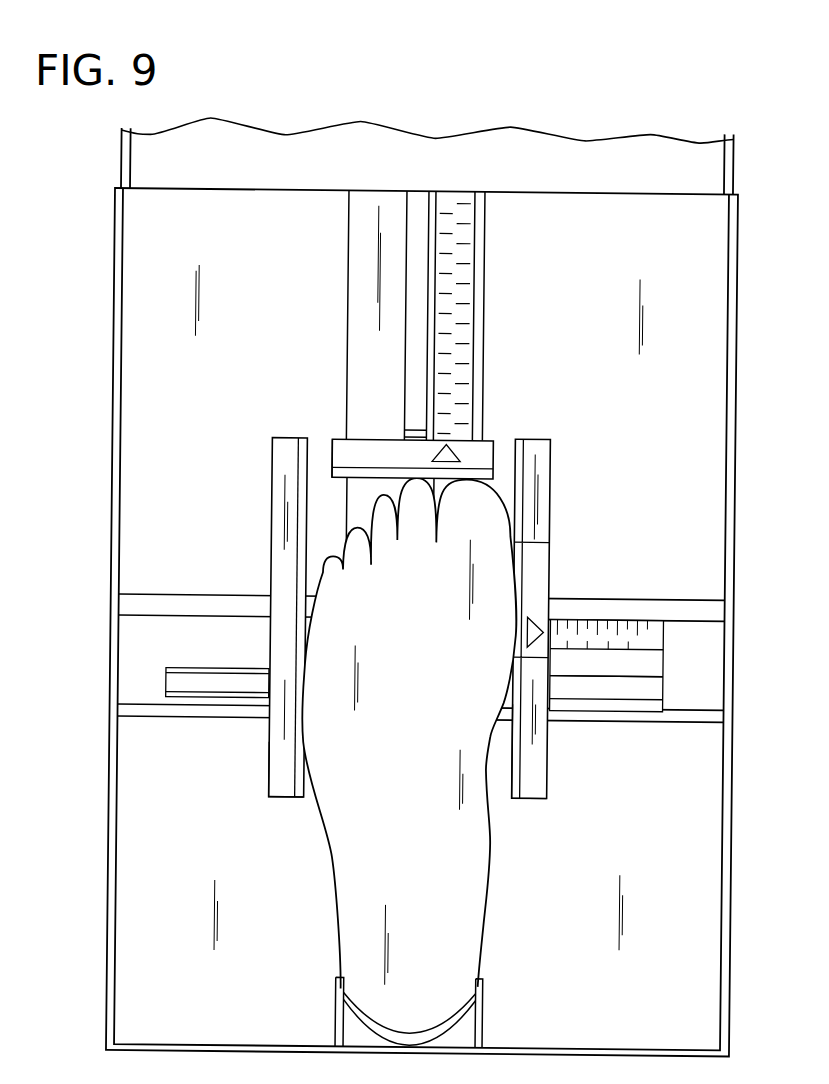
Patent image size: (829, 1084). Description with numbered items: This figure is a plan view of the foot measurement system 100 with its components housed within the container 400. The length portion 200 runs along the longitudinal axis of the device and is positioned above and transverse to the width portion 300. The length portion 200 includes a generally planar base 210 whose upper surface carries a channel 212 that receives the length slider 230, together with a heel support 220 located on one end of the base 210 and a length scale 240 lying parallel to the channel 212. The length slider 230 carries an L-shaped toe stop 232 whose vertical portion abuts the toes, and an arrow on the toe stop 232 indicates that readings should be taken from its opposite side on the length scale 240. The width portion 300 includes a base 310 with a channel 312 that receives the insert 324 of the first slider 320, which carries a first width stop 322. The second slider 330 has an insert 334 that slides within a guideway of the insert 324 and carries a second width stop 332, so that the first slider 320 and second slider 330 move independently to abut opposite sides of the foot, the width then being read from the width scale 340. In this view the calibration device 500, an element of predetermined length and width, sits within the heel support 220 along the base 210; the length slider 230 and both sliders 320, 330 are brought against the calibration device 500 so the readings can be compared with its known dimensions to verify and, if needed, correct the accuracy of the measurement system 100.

The foot measurement system 100 is at (401, 586).
The length portion 200 is at (413, 377).
The base 210 is at (373, 323).
The channel 212 is at (420, 277).
The heel support 220 is at (495, 1018).
The length slider 230 is at (490, 446).
The toe stop 232 is at (345, 448).
The length scale 240 is at (464, 348).
The width portion 300 is at (421, 660).
The base 310 is at (156, 604).
The channel 312 is at (145, 682).
The first slider 320 is at (280, 459).
The first width stop 322 is at (279, 768).
The insert 324 is at (580, 662).
The second slider 330 is at (536, 766).
The second width stop 332 is at (543, 474).
The insert 334 is at (203, 687).
The width scale 340 is at (650, 631).
The container 400 is at (740, 355).
The calibration device 500 is at (498, 836).